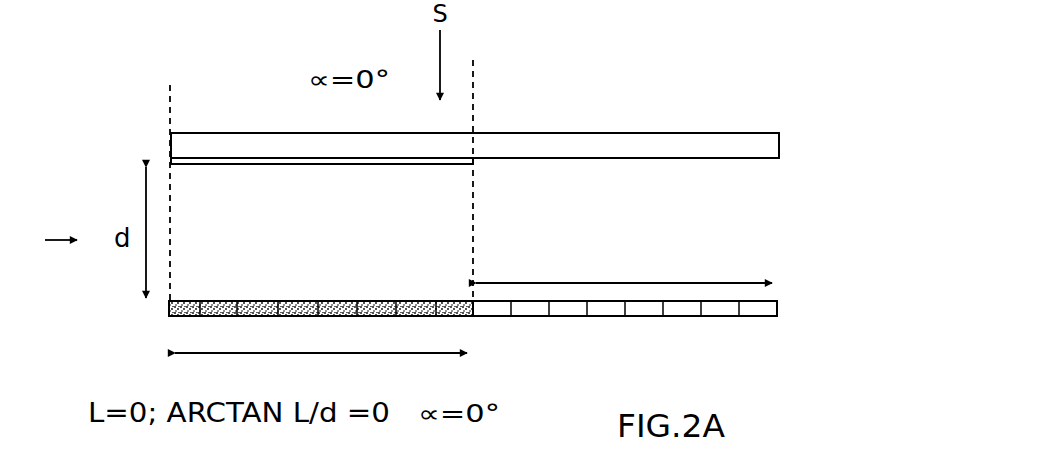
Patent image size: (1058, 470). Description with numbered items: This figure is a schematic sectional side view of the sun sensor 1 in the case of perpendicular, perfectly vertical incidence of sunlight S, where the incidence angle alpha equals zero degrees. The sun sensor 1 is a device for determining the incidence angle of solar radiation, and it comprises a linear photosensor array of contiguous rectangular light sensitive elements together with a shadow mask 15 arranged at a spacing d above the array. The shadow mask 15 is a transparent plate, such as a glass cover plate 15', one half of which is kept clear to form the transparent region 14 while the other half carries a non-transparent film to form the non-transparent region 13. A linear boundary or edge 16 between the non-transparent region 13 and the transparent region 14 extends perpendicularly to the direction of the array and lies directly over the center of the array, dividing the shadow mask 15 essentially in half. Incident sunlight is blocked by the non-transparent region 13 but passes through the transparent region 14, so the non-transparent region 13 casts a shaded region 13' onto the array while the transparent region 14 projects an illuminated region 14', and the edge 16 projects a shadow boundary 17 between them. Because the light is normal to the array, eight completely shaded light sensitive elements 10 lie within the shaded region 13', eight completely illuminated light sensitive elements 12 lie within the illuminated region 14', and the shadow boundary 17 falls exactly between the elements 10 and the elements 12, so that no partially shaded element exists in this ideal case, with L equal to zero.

The sun sensor 1 is at (53, 242).
The completely shaded light sensitive elements 10 is at (242, 302).
The completely illuminated light sensitive elements 12 is at (643, 308).
The non-transparent region 13 is at (322, 131).
The shaded region 13' is at (321, 372).
The transparent region 14 is at (626, 120).
The illuminated region 14' is at (624, 262).
The shadow mask 15 is at (507, 129).
The glass cover plate 15' is at (766, 126).
The linear boundary or edge 16 is at (474, 161).
The shadow boundary 17 is at (473, 301).